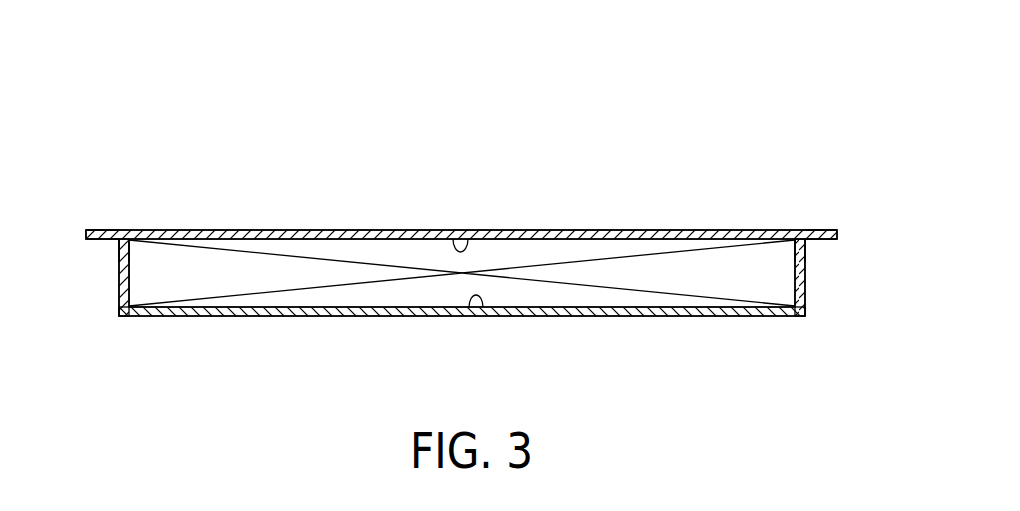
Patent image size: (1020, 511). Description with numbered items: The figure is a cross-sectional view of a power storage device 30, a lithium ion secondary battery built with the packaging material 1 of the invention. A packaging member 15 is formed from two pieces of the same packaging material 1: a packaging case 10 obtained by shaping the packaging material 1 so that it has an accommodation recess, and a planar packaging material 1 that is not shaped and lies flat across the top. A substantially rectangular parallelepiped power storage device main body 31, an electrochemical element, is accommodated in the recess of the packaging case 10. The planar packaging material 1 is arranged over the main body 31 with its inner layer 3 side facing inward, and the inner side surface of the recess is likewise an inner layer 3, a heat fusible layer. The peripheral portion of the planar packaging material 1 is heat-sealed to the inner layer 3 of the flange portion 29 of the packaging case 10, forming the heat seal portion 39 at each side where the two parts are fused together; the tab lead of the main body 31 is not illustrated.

The power storage device 30 is at (461, 230).
The packaging member 15 is at (461, 202).
The packaging material 1 is at (375, 237).
The packaging case 10 is at (292, 310).
The heat seal portion 39 is at (107, 231).
The flange portion 29 is at (100, 243).
The inner layer 3 is at (470, 237).
The power storage device main body 31 is at (577, 273).